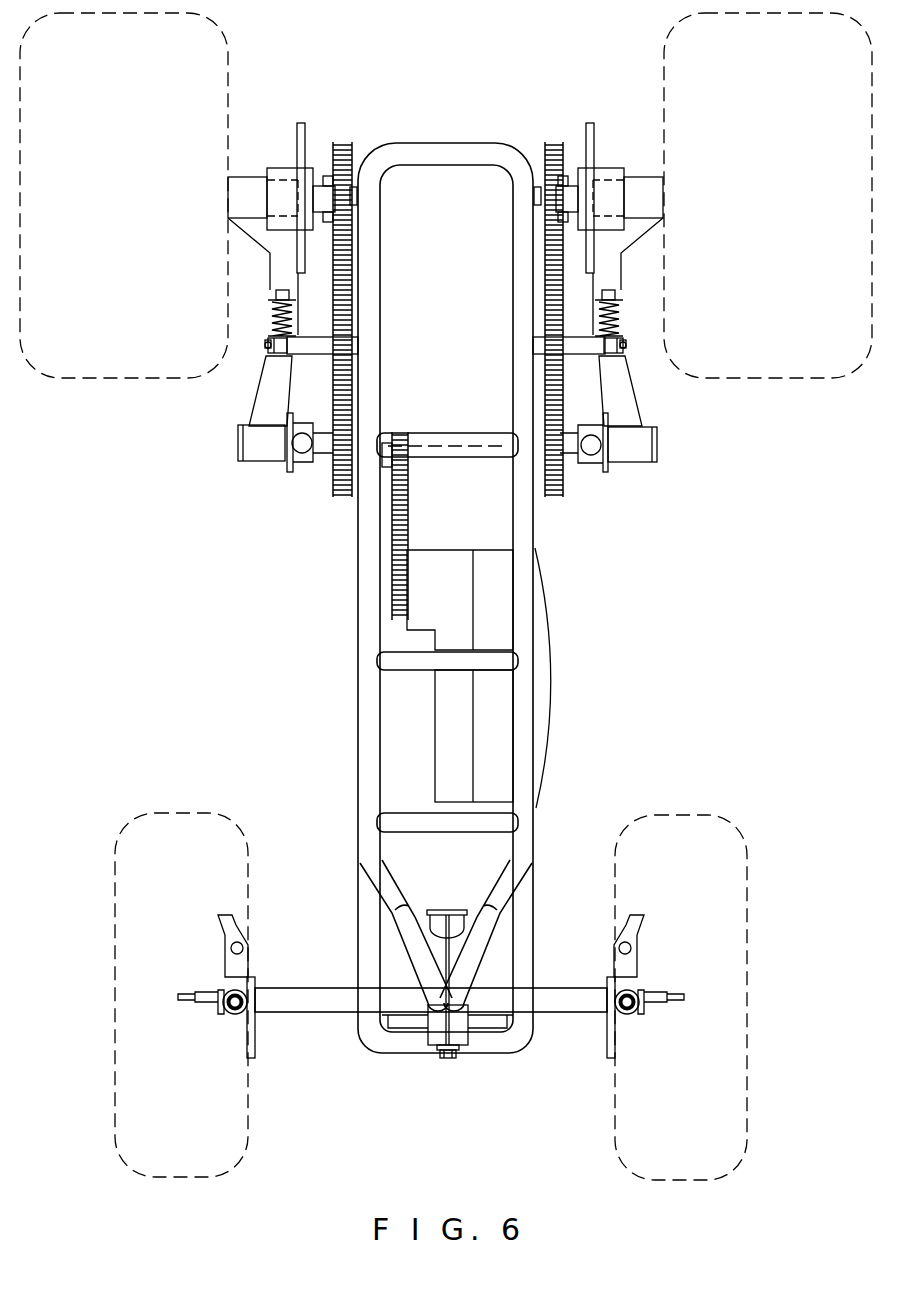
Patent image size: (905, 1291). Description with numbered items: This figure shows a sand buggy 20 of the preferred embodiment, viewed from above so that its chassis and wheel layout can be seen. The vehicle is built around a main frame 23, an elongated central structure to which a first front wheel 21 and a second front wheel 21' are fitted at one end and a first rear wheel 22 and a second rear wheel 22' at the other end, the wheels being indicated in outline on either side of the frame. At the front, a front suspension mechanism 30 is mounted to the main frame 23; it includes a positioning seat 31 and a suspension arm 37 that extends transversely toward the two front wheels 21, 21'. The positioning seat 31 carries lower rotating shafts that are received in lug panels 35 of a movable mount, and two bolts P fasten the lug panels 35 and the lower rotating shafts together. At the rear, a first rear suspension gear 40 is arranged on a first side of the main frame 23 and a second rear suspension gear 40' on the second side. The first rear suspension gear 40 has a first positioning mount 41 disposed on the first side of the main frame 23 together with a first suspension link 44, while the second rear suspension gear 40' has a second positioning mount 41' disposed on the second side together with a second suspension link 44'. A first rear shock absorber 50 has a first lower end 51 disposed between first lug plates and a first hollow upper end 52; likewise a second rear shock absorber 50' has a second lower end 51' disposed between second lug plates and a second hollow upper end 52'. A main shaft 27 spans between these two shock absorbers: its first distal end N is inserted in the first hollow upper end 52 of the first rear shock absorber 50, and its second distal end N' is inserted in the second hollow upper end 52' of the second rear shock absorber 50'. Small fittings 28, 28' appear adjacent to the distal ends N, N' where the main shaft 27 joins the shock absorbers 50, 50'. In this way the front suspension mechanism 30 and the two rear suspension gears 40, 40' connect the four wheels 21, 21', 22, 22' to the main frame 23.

The vehicle frame 20 is at (568, 670).
The first front wheel 21 is at (181, 1016).
The second front wheel 21' is at (681, 1017).
The first rear wheel 22 is at (124, 219).
The second rear wheel 22' is at (768, 219).
The main frame 23 is at (446, 822).
The main shaft 27 is at (449, 343).
The adjusting nut 28 is at (234, 354).
The adjusting nut 28' is at (664, 354).
The front suspension mechanism 30 is at (456, 1011).
The positioning seat 31 is at (447, 1023).
The lug panels 35 is at (462, 1048).
The suspension arm 37 is at (395, 998).
The first rear suspension gear 40 is at (252, 382).
The second rear suspension gear 40' is at (636, 380).
The first positioning mount 41 is at (285, 456).
The second positioning mount 41' is at (608, 459).
The first suspension link 44 is at (252, 391).
The second suspension link 44' is at (638, 391).
The first rear shock absorber 50 is at (264, 318).
The second rear shock absorber 50' is at (630, 318).
The first lower end 51 is at (262, 282).
The second lower end 51' is at (632, 278).
The first hollow upper end 52 is at (261, 359).
The second hollow upper end 52' is at (595, 365).
The first distal end N is at (235, 333).
The second distal end N' is at (643, 340).
The bolts P is at (447, 1062).